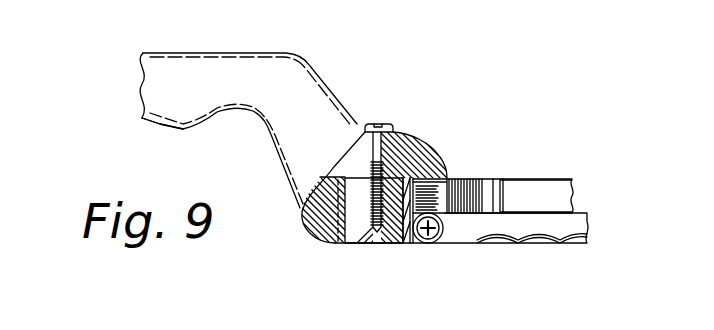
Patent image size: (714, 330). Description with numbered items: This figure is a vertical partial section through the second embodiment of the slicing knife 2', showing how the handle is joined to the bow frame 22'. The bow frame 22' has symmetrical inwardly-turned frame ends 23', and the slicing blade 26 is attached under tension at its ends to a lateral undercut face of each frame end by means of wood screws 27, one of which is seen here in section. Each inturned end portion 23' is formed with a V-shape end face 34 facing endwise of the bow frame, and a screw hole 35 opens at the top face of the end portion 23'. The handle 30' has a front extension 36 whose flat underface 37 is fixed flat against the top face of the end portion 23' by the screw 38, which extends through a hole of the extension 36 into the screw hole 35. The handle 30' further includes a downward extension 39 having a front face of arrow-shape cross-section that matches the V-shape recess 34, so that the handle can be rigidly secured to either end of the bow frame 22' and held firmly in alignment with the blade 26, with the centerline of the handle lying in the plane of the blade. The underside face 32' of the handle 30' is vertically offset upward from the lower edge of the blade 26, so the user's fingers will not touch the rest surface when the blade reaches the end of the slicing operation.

The slicing knife 2' is at (553, 172).
The bow frame 22' is at (493, 172).
The inwardly-turned frame end 23' is at (420, 229).
The slicing blade 26 is at (529, 227).
The wood screw 27 is at (446, 243).
The handle 30' is at (248, 108).
The underside face 32' is at (120, 132).
The V-shape end face 34 is at (339, 238).
The screw hole 35 is at (369, 240).
The front extension 36 is at (423, 155).
The flat underface 37 is at (454, 175).
The screw 38 is at (381, 142).
The downward extension 39 is at (316, 205).